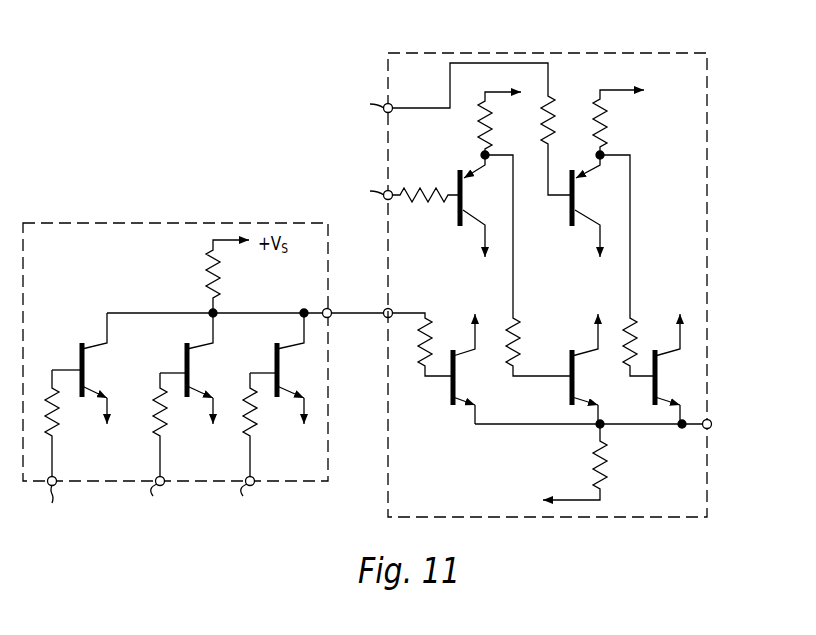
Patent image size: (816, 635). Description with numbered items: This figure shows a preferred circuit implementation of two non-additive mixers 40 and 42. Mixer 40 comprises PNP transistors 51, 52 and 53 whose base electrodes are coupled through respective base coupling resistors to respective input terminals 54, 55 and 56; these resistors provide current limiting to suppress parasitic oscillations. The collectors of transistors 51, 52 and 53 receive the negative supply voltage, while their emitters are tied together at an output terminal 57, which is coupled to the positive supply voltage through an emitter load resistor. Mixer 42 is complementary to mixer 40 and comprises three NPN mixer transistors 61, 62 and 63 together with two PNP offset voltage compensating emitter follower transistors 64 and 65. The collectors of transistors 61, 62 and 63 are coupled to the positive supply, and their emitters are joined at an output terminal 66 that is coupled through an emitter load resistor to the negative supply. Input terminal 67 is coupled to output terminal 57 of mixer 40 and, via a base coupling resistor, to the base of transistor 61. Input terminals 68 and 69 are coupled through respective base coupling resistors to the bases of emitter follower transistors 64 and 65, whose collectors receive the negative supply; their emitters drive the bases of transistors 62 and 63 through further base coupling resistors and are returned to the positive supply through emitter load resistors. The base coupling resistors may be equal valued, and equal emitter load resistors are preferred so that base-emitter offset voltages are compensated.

The non-additive mixer 40 is at (165, 223).
The non-additive mixer 42 is at (425, 53).
The PNP transistor 51 is at (118, 383).
The PNP transistor 52 is at (222, 383).
The PNP transistor 53 is at (312, 383).
The input terminal 54 is at (63, 472).
The input terminal 55 is at (171, 472).
The input terminal 56 is at (261, 472).
The output terminal 57 is at (330, 316).
The NPN mixer transistor 61 is at (485, 393).
The NPN mixer transistor 62 is at (607, 393).
The NPN mixer transistor 63 is at (690, 393).
The offset voltage compensating emitter follower transistor 64 is at (498, 216).
The offset voltage compensating emitter follower transistor 65 is at (612, 216).
The output terminal 66 is at (704, 427).
The input terminal 67 is at (385, 310).
The input terminal 68 is at (391, 192).
The input terminal 69 is at (391, 105).